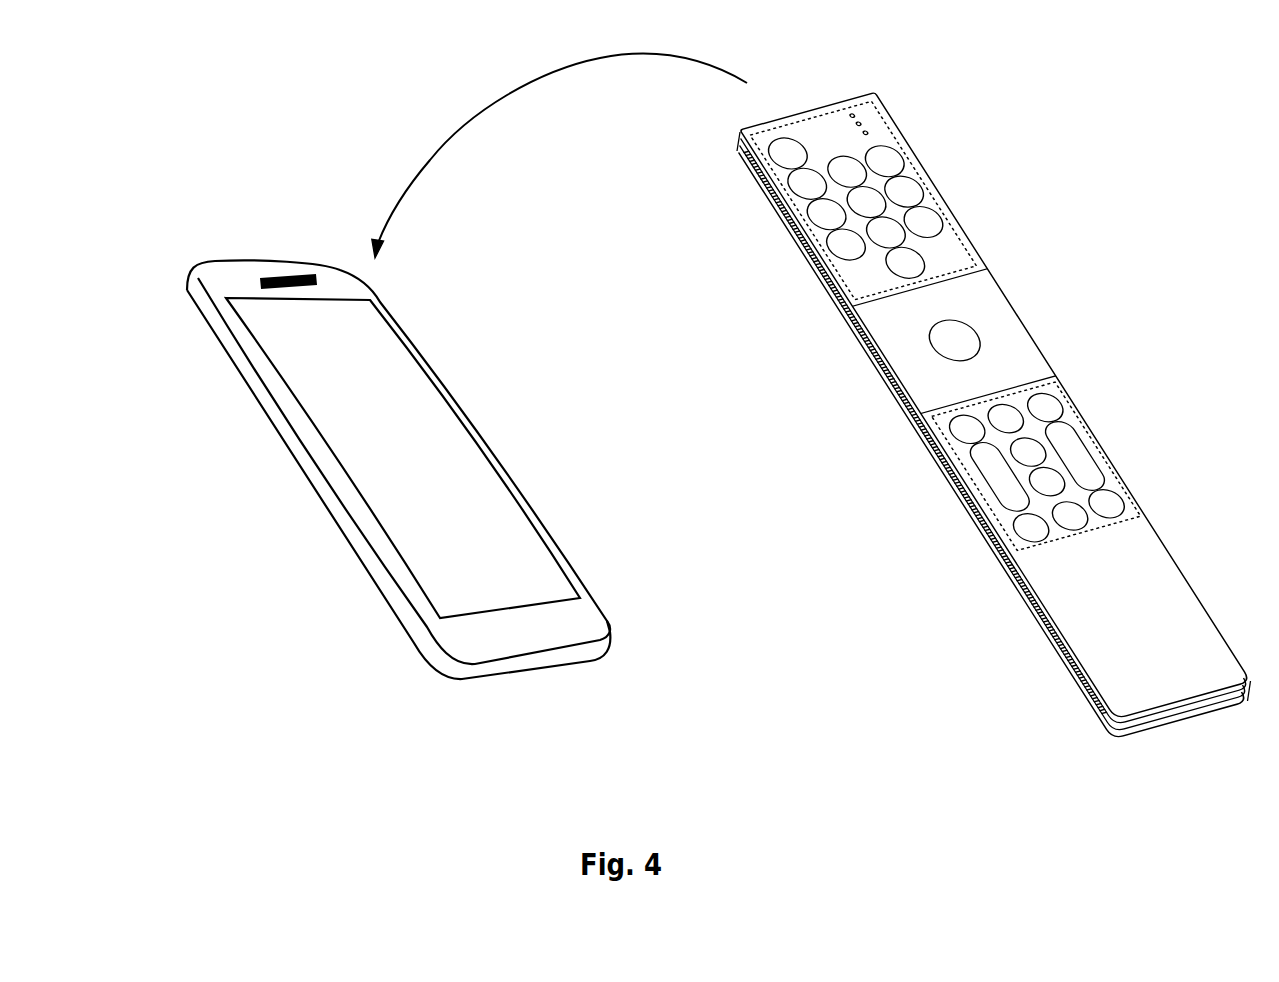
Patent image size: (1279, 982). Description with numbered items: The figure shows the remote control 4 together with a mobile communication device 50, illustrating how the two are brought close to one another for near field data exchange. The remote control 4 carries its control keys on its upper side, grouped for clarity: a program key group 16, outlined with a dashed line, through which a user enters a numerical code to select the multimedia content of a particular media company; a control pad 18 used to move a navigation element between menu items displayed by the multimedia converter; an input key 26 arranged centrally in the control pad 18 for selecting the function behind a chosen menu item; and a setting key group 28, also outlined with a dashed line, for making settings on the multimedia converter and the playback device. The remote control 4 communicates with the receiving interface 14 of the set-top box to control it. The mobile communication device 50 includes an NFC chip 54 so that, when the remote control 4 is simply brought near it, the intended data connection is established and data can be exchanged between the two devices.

The remote control 4 is at (1137, 124).
The receiving interface 14 is at (1020, 217).
The program key group 16 is at (820, 120).
The control pad 18 is at (975, 290).
The input key 26 is at (963, 340).
The setting key group 28 is at (1118, 470).
The mobile communication device 50 is at (466, 312).
The NFC chip 54 is at (462, 446).